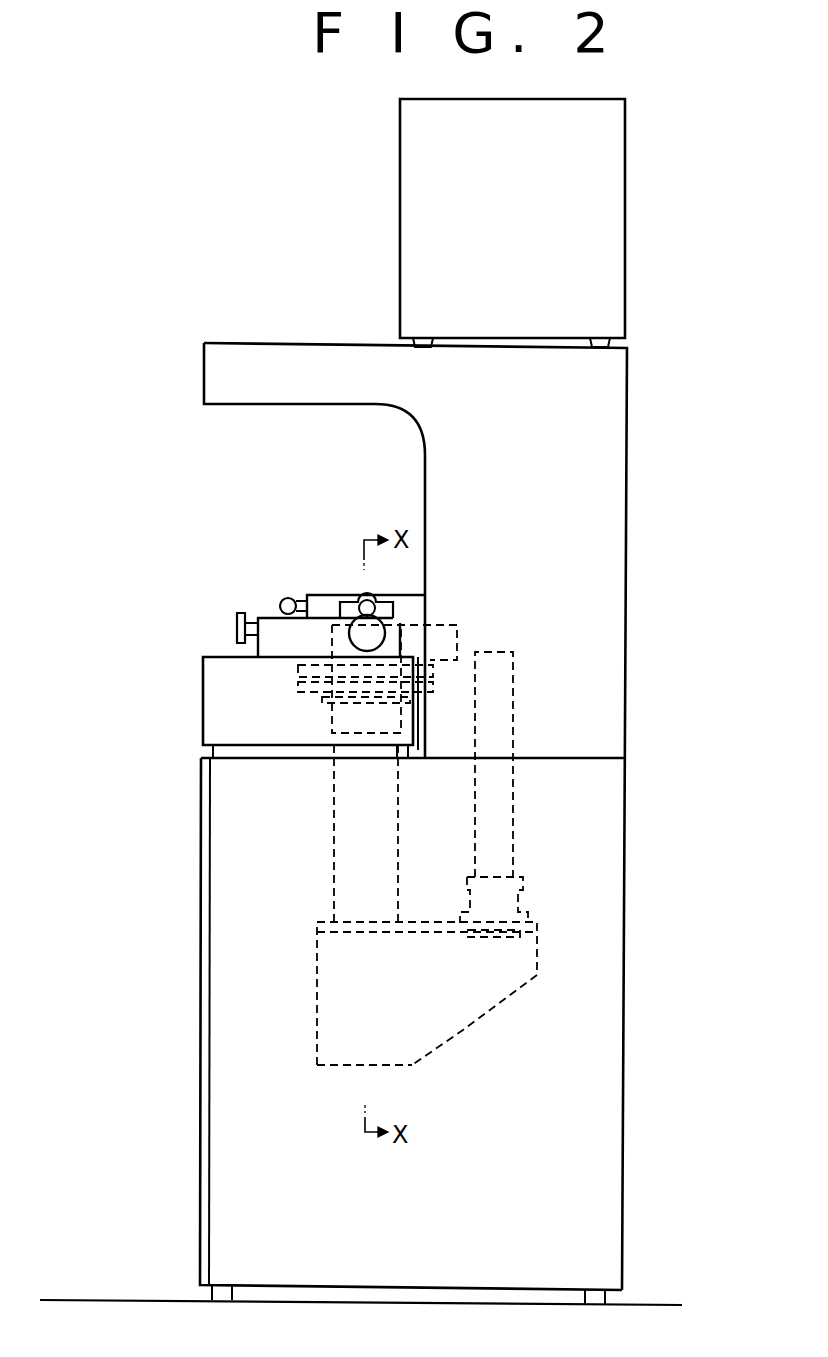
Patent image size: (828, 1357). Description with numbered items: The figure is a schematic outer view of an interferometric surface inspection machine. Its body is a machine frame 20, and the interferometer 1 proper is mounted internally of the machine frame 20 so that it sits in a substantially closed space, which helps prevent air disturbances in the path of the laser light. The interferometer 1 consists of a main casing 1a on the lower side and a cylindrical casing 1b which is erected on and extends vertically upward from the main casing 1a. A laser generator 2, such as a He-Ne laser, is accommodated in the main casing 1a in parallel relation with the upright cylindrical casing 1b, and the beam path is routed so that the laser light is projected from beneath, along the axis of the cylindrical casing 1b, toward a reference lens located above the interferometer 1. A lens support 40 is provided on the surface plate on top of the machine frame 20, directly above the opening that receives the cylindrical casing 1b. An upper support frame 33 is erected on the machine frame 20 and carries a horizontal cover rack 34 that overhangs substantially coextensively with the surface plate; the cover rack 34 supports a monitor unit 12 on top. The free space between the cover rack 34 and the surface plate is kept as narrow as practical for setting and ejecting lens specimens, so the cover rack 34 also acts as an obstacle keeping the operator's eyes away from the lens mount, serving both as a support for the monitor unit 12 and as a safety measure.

The interferometer 1 is at (538, 948).
The main casing 1a is at (463, 1030).
The cylindrical casing 1b is at (334, 832).
The laser generator 2 is at (513, 692).
The monitor unit 12 is at (400, 215).
The machine frame 20 is at (220, 1014).
The upper support frame 33 is at (618, 401).
The cover rack 34 is at (204, 378).
The lens support 40 is at (265, 609).